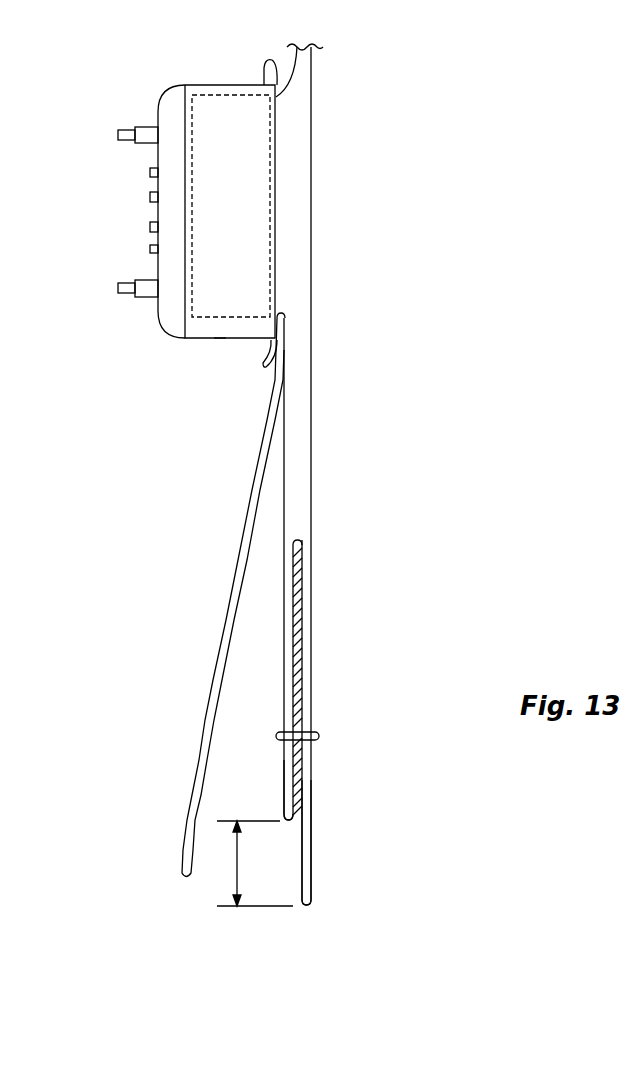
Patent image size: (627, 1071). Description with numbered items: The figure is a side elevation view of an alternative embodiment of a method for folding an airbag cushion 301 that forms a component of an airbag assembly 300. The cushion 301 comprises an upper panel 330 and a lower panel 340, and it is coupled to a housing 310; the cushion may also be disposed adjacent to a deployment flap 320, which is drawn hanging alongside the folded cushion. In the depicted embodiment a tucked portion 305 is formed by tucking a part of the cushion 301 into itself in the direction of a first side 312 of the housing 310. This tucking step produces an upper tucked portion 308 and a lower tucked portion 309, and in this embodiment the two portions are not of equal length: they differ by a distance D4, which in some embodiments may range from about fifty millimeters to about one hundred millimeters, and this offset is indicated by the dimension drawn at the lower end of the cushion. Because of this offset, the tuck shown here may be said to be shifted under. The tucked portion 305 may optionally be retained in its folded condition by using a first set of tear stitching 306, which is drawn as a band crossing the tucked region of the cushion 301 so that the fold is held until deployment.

The airbag assembly 300 is at (380, 128).
The airbag cushion 301 is at (318, 257).
The tucked portion 305 is at (298, 668).
The first set of tear stitching 306 is at (318, 737).
The upper tucked portion 308 is at (310, 793).
The lower tucked portion 309 is at (285, 788).
The housing 310 is at (155, 100).
The first side 312 is at (220, 340).
The deployment flap 320 is at (220, 640).
The upper panel 330 is at (313, 58).
The lower panel 340 is at (290, 48).